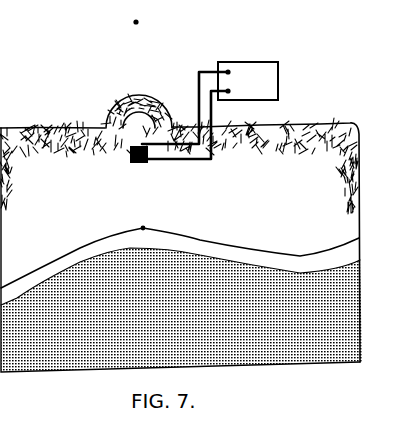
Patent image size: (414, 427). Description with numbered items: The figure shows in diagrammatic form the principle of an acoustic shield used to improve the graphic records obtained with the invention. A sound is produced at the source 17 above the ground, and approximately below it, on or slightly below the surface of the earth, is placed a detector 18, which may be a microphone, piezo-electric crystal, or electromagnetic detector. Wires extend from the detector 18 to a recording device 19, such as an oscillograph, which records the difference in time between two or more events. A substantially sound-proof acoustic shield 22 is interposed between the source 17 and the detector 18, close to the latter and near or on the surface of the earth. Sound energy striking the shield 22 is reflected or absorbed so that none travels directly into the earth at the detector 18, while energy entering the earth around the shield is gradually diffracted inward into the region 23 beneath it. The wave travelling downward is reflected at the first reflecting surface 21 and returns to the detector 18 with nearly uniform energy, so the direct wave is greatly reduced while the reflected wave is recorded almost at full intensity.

The source 17 is at (150, 21).
The detector 18 is at (167, 119).
The recording device 19 is at (263, 81).
The first reflecting surface 21 is at (180, 244).
The acoustic shield 22 is at (139, 99).
The region 23 is at (180, 245).